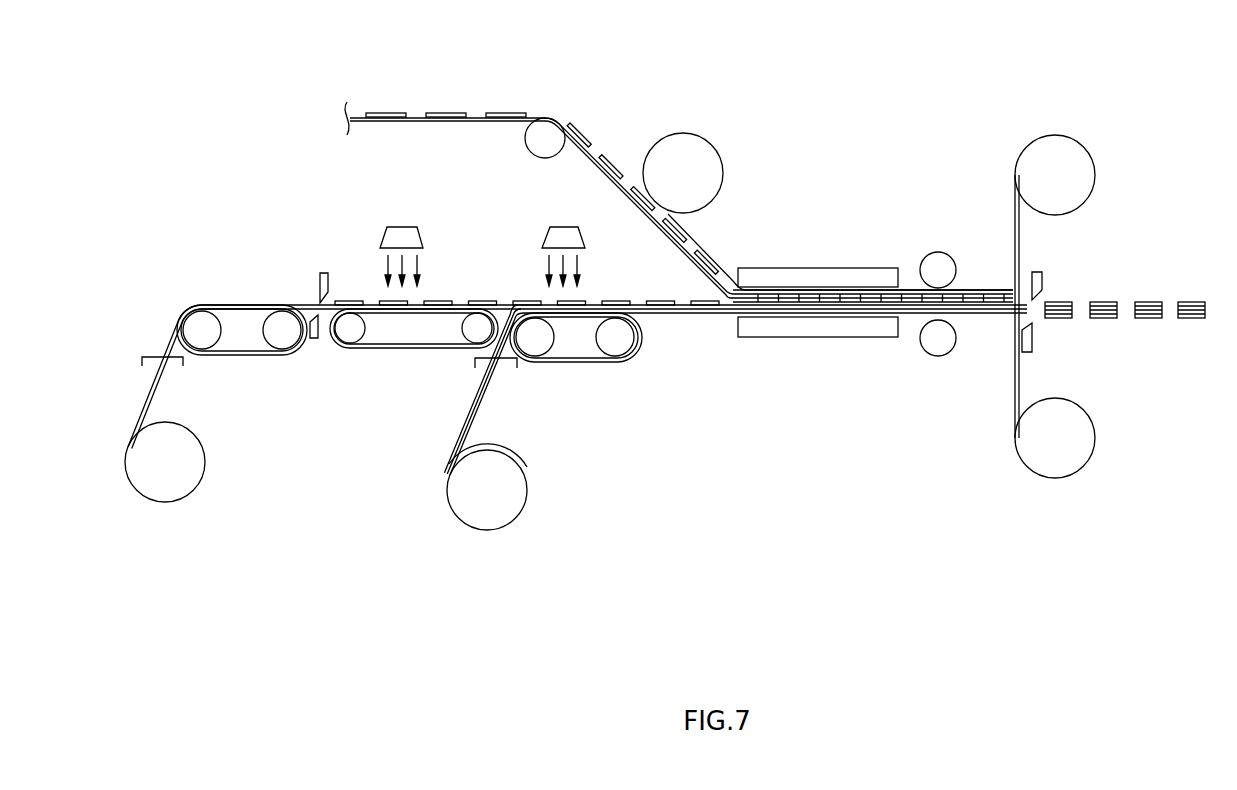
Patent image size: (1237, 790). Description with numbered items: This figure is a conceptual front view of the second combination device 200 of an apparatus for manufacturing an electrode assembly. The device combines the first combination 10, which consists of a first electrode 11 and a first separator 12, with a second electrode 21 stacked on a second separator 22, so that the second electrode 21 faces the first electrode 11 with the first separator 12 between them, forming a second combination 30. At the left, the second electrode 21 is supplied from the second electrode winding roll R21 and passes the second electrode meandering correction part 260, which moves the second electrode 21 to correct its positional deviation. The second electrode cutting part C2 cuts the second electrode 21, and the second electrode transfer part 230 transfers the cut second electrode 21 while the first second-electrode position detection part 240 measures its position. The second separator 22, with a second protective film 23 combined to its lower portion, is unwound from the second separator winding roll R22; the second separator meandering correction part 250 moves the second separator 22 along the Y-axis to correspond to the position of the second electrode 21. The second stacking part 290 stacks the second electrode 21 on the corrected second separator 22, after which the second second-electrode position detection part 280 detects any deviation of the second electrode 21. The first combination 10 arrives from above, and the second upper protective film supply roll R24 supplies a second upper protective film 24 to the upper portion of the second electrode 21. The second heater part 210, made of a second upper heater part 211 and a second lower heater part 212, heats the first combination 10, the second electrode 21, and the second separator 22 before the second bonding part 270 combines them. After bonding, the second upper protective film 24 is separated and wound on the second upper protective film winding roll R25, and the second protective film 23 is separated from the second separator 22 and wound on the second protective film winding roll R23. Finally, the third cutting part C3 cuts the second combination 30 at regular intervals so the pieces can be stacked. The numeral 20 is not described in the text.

The second combination device 200 is at (247, 110).
The first combination 10 is at (505, 100).
The first electrode 11 is at (445, 113).
The first separator 12 is at (448, 122).
The second laminate 20 is at (620, 288).
The second electrode 21 is at (446, 301).
The second separator 22 is at (455, 460).
The second protective film 23 is at (527, 467).
The second upper protective film 24 is at (700, 250).
The second combination 30 is at (1103, 288).
The second heater part 210 is at (822, 248).
The second upper heater part 211 is at (857, 275).
The second lower heater part 212 is at (857, 340).
The second electrode transfer part 230 is at (367, 366).
The first second-electrode position detection part 240 is at (400, 227).
The second separator meandering correction part 250 is at (475, 360).
The second electrode meandering correction part 260 is at (142, 358).
The second bonding part 270 is at (938, 240).
The second second-electrode position detection part 280 is at (560, 227).
The second stacking part 290 is at (622, 379).
The second electrode winding roll R21 is at (165, 492).
The second separator winding roll R22 is at (487, 528).
The second protective film winding roll R23 is at (1055, 478).
The second upper protective film supply roll R24 is at (683, 148).
The second upper protective film winding roll R25 is at (1053, 150).
The second electrode cutting part C2 is at (317, 358).
The third cutting part C3 is at (1050, 346).